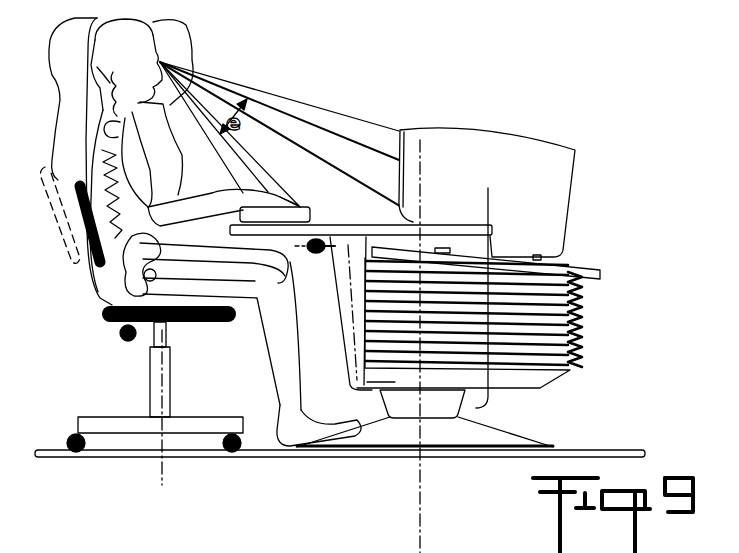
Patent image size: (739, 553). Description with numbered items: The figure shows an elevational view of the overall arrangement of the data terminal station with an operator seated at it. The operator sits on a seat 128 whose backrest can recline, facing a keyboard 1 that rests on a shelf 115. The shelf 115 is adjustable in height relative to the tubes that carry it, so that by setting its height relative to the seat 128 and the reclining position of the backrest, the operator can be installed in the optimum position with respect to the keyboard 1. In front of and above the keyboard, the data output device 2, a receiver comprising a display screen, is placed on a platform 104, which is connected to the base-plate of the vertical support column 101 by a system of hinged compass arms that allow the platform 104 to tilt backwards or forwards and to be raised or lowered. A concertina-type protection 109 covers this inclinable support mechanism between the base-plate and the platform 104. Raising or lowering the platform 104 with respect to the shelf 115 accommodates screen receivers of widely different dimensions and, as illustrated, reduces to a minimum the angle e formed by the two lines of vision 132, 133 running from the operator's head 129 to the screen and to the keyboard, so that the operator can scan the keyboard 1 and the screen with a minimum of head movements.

The data input device 1 is at (290, 212).
The data output device 2 is at (532, 152).
The vertical support column 101 is at (476, 408).
The platform 104 is at (587, 267).
The concertina-type protection 109 is at (588, 347).
The shelf 115 is at (440, 227).
The seat 128 is at (143, 381).
The operator head 129 is at (143, 40).
The line of vision 132 is at (288, 118).
The line of vision 133 is at (237, 167).